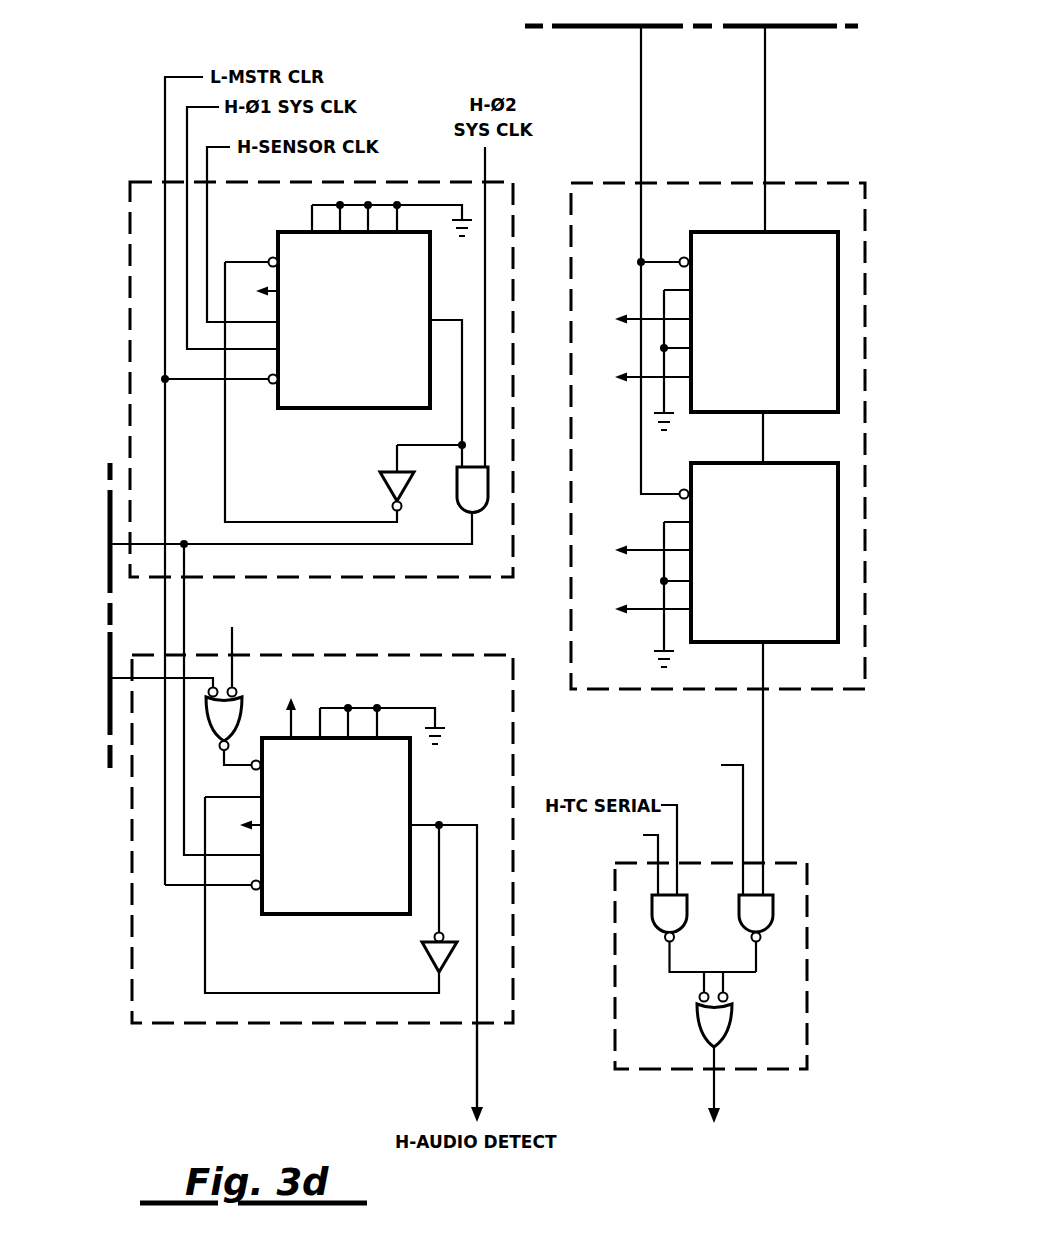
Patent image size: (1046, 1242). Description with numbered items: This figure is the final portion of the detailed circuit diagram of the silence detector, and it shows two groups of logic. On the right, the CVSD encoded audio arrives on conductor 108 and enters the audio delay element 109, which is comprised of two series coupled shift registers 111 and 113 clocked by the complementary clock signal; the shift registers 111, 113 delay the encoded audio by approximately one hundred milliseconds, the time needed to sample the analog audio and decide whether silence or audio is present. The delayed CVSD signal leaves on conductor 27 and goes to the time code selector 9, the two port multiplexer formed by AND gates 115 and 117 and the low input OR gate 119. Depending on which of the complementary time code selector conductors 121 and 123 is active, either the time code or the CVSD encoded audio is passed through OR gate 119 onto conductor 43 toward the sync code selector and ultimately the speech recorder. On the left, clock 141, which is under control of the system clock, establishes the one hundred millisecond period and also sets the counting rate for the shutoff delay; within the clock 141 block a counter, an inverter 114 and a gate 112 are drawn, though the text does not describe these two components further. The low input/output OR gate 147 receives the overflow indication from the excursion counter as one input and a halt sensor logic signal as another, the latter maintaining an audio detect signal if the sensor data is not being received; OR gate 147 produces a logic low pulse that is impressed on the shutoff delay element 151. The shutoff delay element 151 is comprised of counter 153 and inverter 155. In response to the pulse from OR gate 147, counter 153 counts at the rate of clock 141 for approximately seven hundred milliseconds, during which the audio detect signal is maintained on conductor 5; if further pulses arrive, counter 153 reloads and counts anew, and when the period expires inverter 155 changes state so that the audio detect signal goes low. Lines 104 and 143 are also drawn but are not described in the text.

The conductor 5 is at (478, 1073).
The time code selector 9 is at (790, 862).
The conductor 27 is at (765, 742).
The conductor 43 is at (716, 1095).
The clock line 104 is at (641, 86).
The conductor 108 is at (765, 86).
The audio delay element 109 is at (812, 182).
The shift register 111 is at (790, 232).
The AND gate 112 is at (455, 488).
The shift register 113 is at (793, 463).
The inverter 114 is at (388, 493).
The AND gate 115 is at (655, 932).
The AND gate 117 is at (737, 915).
The low input OR gate 119 is at (699, 1018).
The time code selector conductor 121 is at (656, 851).
The time code selector conductor 123 is at (736, 762).
The clock 141 is at (352, 578).
The bus line 143 is at (118, 672).
The low input/output OR gate 147 is at (213, 740).
The shutoff delay element 151 is at (452, 655).
The counter 153 is at (410, 783).
The inverter 155 is at (423, 963).